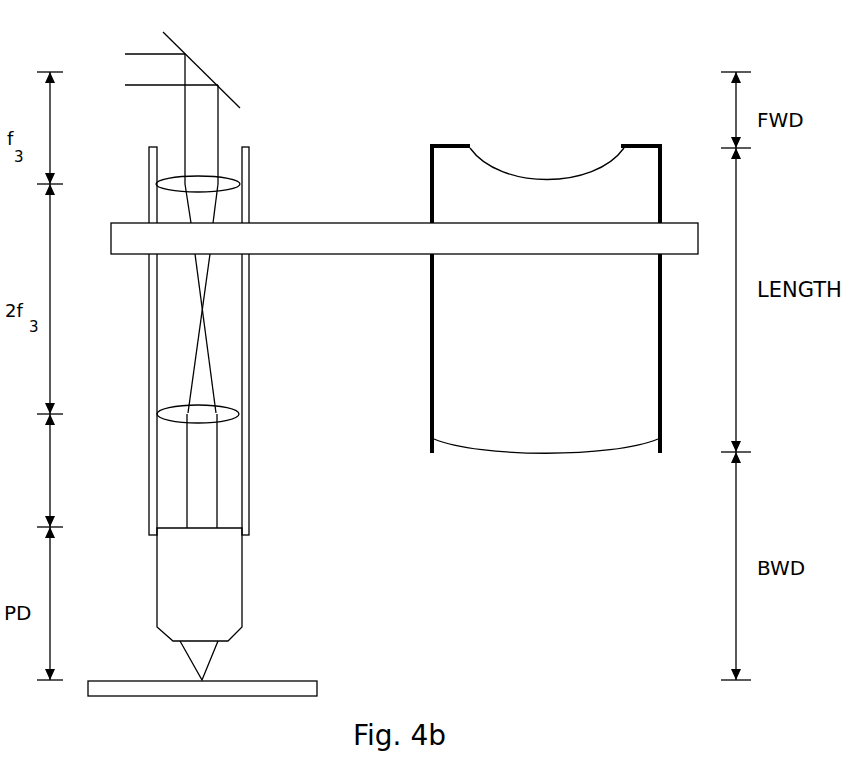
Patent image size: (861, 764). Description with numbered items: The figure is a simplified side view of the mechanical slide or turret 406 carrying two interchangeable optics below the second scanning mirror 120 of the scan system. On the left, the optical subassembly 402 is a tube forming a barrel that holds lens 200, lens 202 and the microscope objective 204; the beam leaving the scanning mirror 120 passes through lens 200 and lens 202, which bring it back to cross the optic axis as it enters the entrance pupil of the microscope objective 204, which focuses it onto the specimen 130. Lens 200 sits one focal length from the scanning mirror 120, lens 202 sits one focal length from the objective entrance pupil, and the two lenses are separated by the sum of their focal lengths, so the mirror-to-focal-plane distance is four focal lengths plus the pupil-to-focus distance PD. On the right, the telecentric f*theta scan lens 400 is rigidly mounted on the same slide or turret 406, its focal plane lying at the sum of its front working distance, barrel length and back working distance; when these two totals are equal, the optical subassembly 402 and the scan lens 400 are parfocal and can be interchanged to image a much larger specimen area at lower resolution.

The second scanning mirror 120 is at (198, 61).
The specimen 130 is at (265, 681).
The lens 200 is at (174, 181).
The lens 202 is at (173, 411).
The microscope objective 204 is at (157, 593).
The telecentric f*theta scan lens 400 is at (430, 337).
The optical subassembly 402 is at (252, 393).
The mechanical slide or turret 406 is at (357, 222).